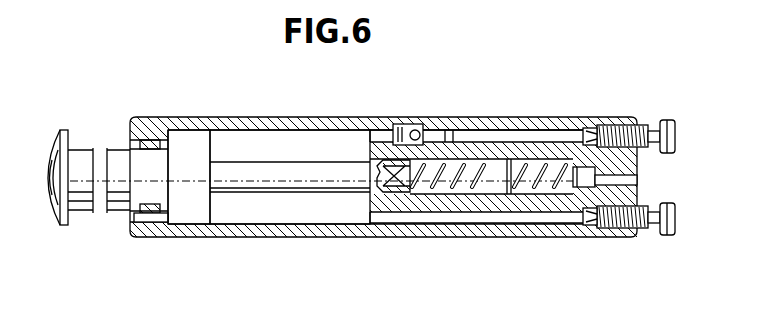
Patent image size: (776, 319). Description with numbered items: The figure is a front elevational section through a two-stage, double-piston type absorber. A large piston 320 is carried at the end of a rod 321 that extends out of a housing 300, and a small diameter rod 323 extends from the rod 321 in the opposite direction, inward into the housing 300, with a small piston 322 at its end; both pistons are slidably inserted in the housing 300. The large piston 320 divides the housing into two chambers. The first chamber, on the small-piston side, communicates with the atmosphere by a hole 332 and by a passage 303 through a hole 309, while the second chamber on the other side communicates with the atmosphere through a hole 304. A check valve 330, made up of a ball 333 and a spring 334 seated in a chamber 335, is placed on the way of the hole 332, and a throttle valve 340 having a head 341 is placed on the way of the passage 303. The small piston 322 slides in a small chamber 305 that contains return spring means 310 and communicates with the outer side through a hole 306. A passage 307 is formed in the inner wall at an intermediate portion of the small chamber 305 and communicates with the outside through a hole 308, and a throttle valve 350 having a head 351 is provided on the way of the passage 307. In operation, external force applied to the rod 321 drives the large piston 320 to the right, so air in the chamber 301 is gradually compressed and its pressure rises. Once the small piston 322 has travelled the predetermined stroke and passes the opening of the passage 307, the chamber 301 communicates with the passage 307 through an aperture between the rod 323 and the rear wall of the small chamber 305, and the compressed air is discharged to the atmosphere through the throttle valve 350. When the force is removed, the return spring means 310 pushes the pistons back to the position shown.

The housing 300 is at (350, 232).
The chamber 301 is at (265, 213).
The passage 303 is at (440, 217).
The hole 304 is at (148, 223).
The small chamber 305 is at (517, 190).
The hole 306 is at (632, 178).
The passage 307 is at (488, 135).
The hole 308 is at (578, 128).
The hole 309 is at (580, 232).
The return spring means 310 is at (509, 158).
The large piston 320 is at (186, 140).
The rod 321 is at (118, 197).
The small piston 322 is at (374, 140).
The small diameter rod 323 is at (280, 167).
The check valve 330 is at (425, 128).
The hole 332 is at (445, 125).
The ball 333 is at (413, 123).
The spring 334 is at (397, 126).
The chamber 335 is at (402, 172).
The throttle valve 340 is at (593, 227).
The head 341 is at (672, 224).
The throttle valve 350 is at (603, 125).
The head 351 is at (676, 134).